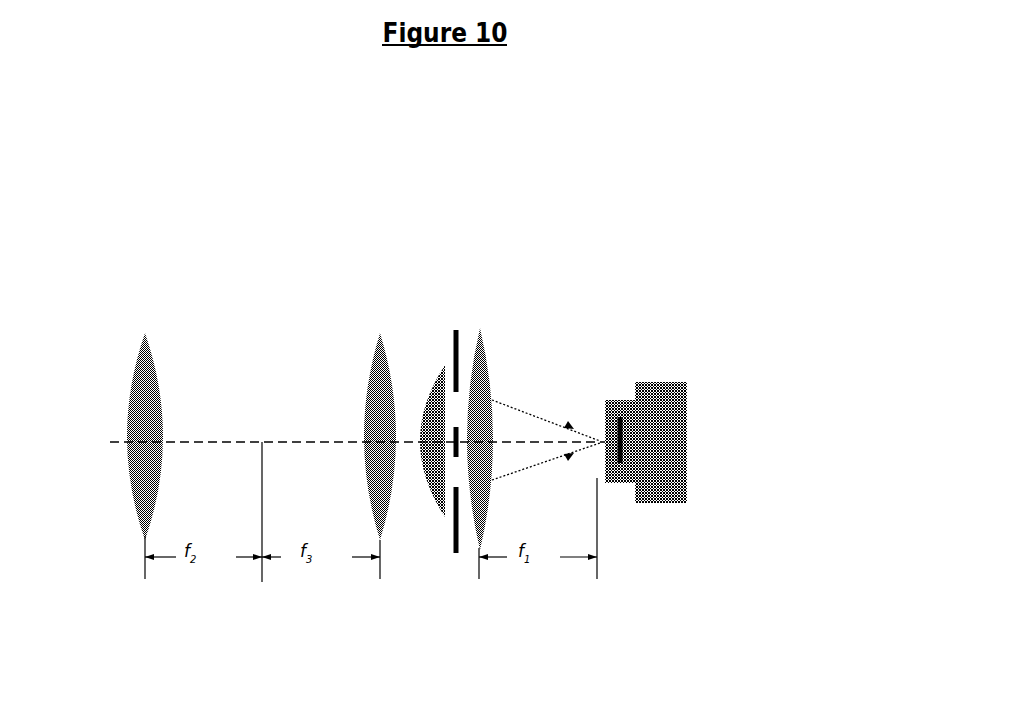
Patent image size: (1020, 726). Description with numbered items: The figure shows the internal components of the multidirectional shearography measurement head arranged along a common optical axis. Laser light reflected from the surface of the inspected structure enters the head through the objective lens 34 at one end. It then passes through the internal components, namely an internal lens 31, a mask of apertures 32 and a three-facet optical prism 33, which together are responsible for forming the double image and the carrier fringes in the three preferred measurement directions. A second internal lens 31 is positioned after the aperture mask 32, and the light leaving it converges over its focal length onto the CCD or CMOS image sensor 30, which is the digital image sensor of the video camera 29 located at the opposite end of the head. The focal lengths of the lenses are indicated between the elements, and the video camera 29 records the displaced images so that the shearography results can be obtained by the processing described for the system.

The video camera 29 is at (677, 490).
The CCD or CMOS image sensor 30 is at (625, 400).
The internal lens 31 is at (370, 385).
The mask of apertures 32 is at (456, 330).
The three-facet optical prism 33 is at (433, 362).
The objective lens 34 is at (145, 333).